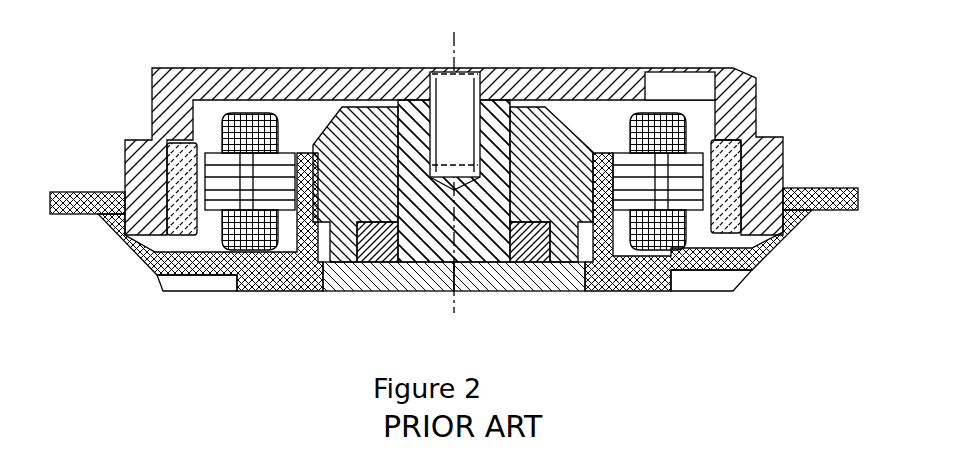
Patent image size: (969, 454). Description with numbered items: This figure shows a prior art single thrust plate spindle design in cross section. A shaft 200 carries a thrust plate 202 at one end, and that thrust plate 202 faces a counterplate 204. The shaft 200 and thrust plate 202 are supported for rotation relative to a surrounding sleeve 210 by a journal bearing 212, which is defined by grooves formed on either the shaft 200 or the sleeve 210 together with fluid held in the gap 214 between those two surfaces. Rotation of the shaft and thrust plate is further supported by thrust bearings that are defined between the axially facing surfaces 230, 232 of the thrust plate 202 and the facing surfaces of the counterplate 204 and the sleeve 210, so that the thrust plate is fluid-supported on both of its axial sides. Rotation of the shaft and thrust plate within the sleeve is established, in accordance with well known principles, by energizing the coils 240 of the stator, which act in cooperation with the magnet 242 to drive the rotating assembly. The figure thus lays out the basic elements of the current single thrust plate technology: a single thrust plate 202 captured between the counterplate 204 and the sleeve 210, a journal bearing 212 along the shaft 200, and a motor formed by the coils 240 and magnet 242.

The shaft 200 is at (497, 140).
The thrust plate 202 is at (380, 293).
The counterplate 204 is at (540, 293).
The sleeve 210 is at (592, 143).
The journal bearing 212 is at (400, 160).
The gap 214 is at (393, 192).
The axially facing surface of the thrust plate 230 is at (520, 293).
The axially facing surface of the thrust plate 232 is at (545, 190).
The coils 240 is at (693, 150).
The magnet 242 is at (732, 236).